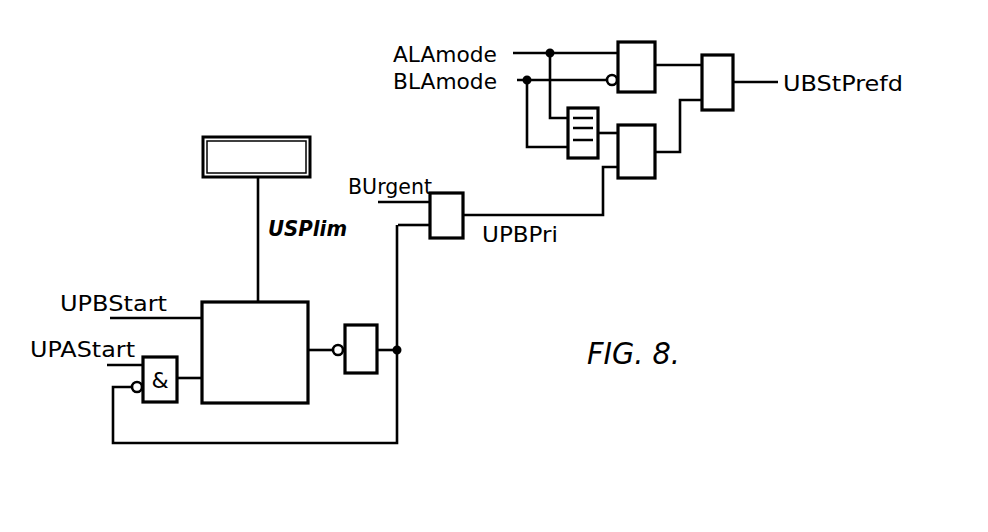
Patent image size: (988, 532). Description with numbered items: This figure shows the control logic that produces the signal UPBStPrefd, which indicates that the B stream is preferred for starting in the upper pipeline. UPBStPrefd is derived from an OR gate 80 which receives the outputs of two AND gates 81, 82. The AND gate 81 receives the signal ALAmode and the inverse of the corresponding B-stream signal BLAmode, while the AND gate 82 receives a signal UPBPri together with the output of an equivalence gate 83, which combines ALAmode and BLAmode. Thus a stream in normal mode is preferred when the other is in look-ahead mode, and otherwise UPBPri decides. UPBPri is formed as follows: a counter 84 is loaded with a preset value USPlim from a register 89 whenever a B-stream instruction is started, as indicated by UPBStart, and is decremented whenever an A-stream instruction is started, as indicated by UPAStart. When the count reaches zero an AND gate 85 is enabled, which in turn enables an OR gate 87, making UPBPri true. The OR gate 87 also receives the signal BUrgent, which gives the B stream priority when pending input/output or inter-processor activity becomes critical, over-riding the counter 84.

The OR gate 80 is at (728, 55).
The AND gate 81 is at (655, 58).
The AND gate 82 is at (655, 160).
The equivalence gate 83 is at (573, 160).
The counter 84 is at (224, 301).
The AND gate 85 is at (363, 325).
The OR gate 87 is at (443, 238).
The register 89 is at (203, 150).